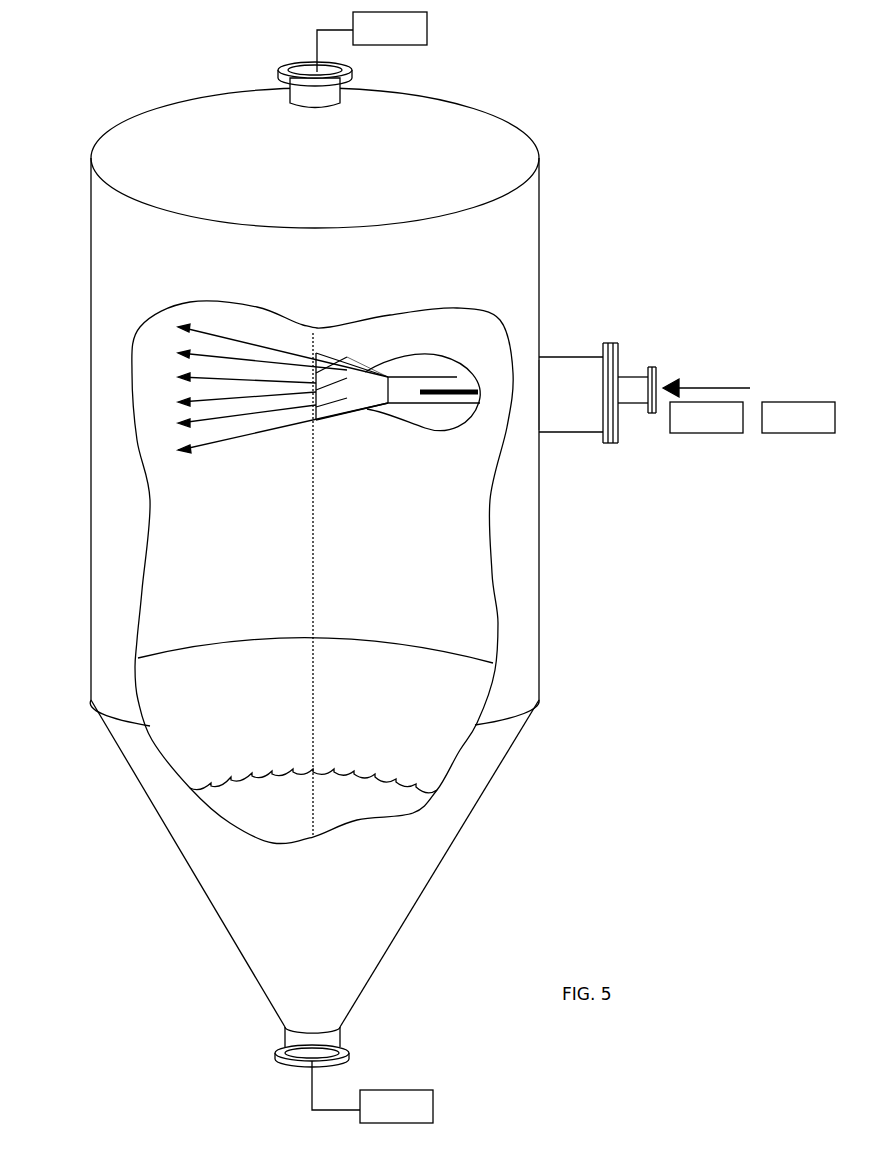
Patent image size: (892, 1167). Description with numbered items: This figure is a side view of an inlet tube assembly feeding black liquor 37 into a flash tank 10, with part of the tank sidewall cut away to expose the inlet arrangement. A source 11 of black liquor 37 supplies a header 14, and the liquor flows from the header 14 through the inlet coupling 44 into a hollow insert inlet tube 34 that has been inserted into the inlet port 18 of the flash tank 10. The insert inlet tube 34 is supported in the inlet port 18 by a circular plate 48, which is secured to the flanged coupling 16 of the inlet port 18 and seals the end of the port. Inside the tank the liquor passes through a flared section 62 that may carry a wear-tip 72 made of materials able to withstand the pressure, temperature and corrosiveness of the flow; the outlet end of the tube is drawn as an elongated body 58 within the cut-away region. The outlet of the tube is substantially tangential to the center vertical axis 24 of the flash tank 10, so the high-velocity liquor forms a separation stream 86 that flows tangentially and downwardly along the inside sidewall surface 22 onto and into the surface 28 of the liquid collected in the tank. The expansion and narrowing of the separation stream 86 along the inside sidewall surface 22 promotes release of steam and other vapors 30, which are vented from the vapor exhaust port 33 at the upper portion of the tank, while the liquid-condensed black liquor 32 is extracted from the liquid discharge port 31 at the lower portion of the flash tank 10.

The flash tank 10 is at (90, 303).
The source 11 is at (783, 433).
The header 14 is at (628, 375).
The flanged coupling 16 is at (605, 438).
The inlet port 18 is at (560, 377).
The inside sidewall surface 22 is at (431, 562).
The center vertical axis 24 is at (310, 565).
The surface of the liquid 28 is at (407, 785).
The steam and other vapors 30 is at (422, 45).
The liquid discharge port 31 is at (278, 1055).
The liquid-condensed black liquor 32 is at (400, 1092).
The vapor exhaust port 33 is at (280, 72).
The insert inlet tube 34 is at (402, 387).
The black liquor 37 is at (695, 433).
The inlet coupling 44 is at (653, 368).
The circular plate 48 is at (613, 443).
The nozzle body 58 is at (450, 390).
The flared section 62 is at (372, 388).
The wear-tip 72 is at (328, 393).
The separation stream 86 is at (205, 380).